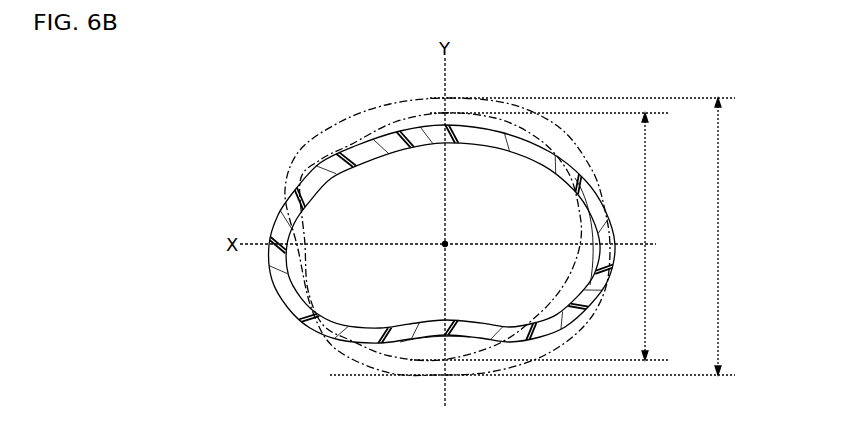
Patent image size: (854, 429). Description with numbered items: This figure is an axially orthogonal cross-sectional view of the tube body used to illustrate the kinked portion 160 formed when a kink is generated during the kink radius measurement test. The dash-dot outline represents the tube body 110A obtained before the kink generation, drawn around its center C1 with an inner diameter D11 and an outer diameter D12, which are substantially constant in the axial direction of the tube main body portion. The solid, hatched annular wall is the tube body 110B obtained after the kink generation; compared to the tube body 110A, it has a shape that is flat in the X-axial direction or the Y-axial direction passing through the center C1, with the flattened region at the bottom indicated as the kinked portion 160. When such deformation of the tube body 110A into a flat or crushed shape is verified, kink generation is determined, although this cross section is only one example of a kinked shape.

The tube body 110A is at (369, 124).
The tube body 110B is at (285, 208).
The center C1 is at (445, 244).
The kinked portion 160 is at (433, 348).
The inner diameter D11 is at (552, 236).
The outer diameter D12 is at (550, 236).